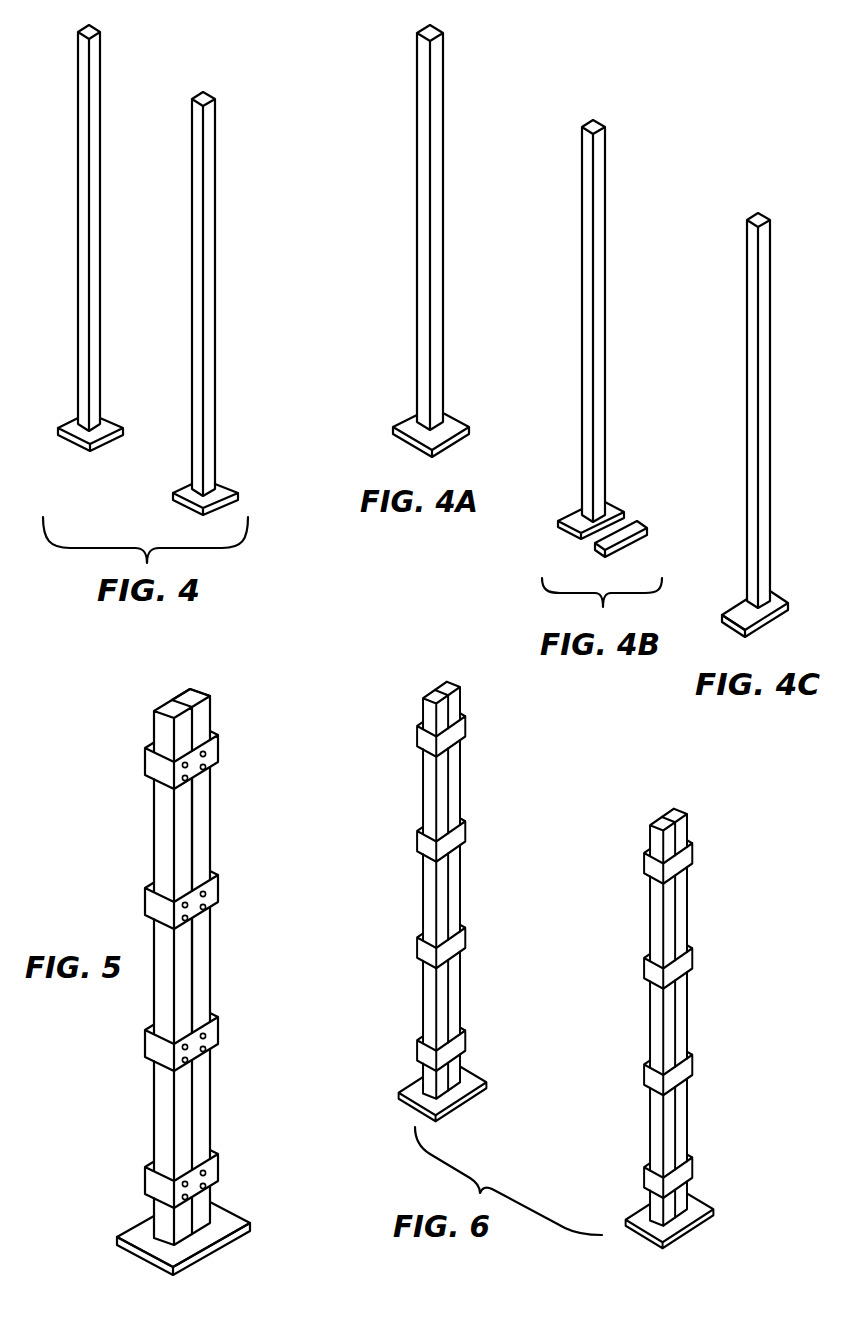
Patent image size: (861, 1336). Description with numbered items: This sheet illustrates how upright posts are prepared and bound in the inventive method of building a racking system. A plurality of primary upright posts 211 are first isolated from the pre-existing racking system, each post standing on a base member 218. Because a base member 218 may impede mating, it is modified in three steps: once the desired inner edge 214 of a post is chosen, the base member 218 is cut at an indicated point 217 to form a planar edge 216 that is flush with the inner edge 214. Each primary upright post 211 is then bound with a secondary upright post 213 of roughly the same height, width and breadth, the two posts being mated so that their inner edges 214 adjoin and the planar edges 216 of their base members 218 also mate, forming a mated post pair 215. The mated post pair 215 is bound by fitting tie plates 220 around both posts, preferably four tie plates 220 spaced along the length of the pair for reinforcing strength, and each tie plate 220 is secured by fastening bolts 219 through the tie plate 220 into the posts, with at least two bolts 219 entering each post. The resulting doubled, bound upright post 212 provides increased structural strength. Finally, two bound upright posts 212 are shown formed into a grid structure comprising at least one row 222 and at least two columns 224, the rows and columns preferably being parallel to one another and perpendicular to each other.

In FIG. 4, the primary upright post 211 is at (78, 278).
In FIG. 5, the primary upright post 211 is at (163, 843).
In FIG. 5, the bound upright post 212 is at (200, 966).
In FIG. 6, the bound upright post 212 is at (615, 965).
In FIG. 5, the secondary upright post 213 is at (200, 850).
In FIG. 4A, the inner edge 214 is at (435, 163).
In FIG. 4B, the inner edge 214 is at (603, 252).
In FIG. 4C, the inner edge 214 is at (766, 333).
In FIG. 5, the inner edge 214 is at (188, 690).
In FIG. 5, the mated post pair 215 is at (182, 962).
In FIG. 4C, the planar edge 216 is at (768, 615).
In FIG. 5, the planar edge 216 is at (210, 1243).
In FIG. 4B, the indicated point 217 is at (639, 506).
In FIG. 4, the base member 218 is at (63, 423).
In FIG. 4A, the base member 218 is at (450, 413).
In FIG. 4B, the base member 218 is at (570, 532).
In FIG. 4C, the base member 218 is at (742, 605).
In FIG. 5, the base member 218 is at (140, 1224).
In FIG. 5, the bolt 219 is at (186, 776).
In FIG. 5, the tie plate 220 is at (148, 756).
In FIG. 6, the tie plate 220 is at (466, 840).
In FIG. 6, the row 222 is at (732, 1149).
In FIG. 5, the column 224 is at (378, 1127).
In FIG. 6, the column 224 is at (596, 1260).